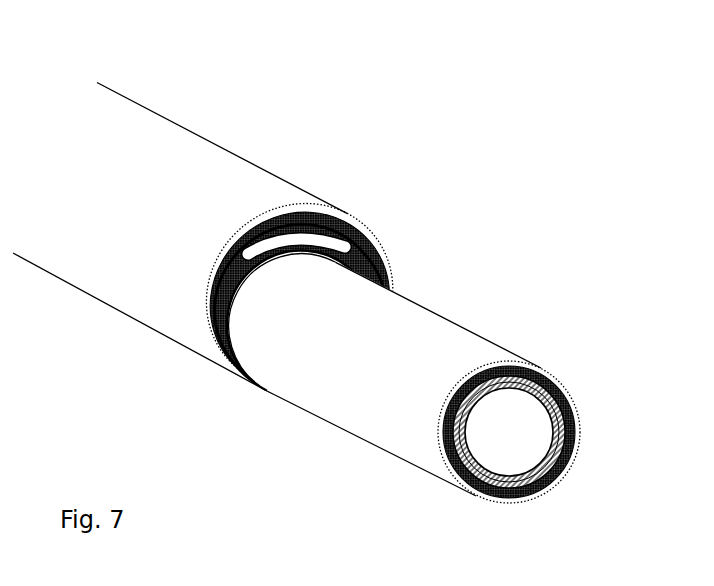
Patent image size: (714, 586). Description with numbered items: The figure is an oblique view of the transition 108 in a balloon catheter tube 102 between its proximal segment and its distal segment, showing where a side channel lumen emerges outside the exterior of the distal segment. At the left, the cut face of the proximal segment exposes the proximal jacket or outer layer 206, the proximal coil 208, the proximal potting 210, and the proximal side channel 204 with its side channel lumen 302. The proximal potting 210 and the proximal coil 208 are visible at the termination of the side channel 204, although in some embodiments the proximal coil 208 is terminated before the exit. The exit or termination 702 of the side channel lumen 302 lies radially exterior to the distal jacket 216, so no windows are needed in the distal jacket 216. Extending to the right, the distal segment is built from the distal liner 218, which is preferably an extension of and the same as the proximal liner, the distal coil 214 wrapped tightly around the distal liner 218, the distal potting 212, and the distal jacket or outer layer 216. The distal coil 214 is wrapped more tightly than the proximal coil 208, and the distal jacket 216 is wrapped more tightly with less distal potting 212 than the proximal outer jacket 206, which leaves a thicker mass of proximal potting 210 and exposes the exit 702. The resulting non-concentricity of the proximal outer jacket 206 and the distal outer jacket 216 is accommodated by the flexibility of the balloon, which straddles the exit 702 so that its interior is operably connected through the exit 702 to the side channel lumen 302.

The catheter tube 102 is at (326, 98).
The transition 108 is at (177, 373).
The side channel 204 is at (350, 237).
The proximal jacket or outer layer 206 is at (125, 308).
The proximal coil 208 is at (264, 234).
The proximal potting 210 is at (377, 267).
The distal potting 212 is at (550, 380).
The distal coil 214 is at (490, 498).
The distal jacket or outer layer 216 is at (363, 413).
The distal liner 218 is at (560, 482).
The side channel lumen 302 is at (305, 240).
The exit or termination 702 is at (264, 255).